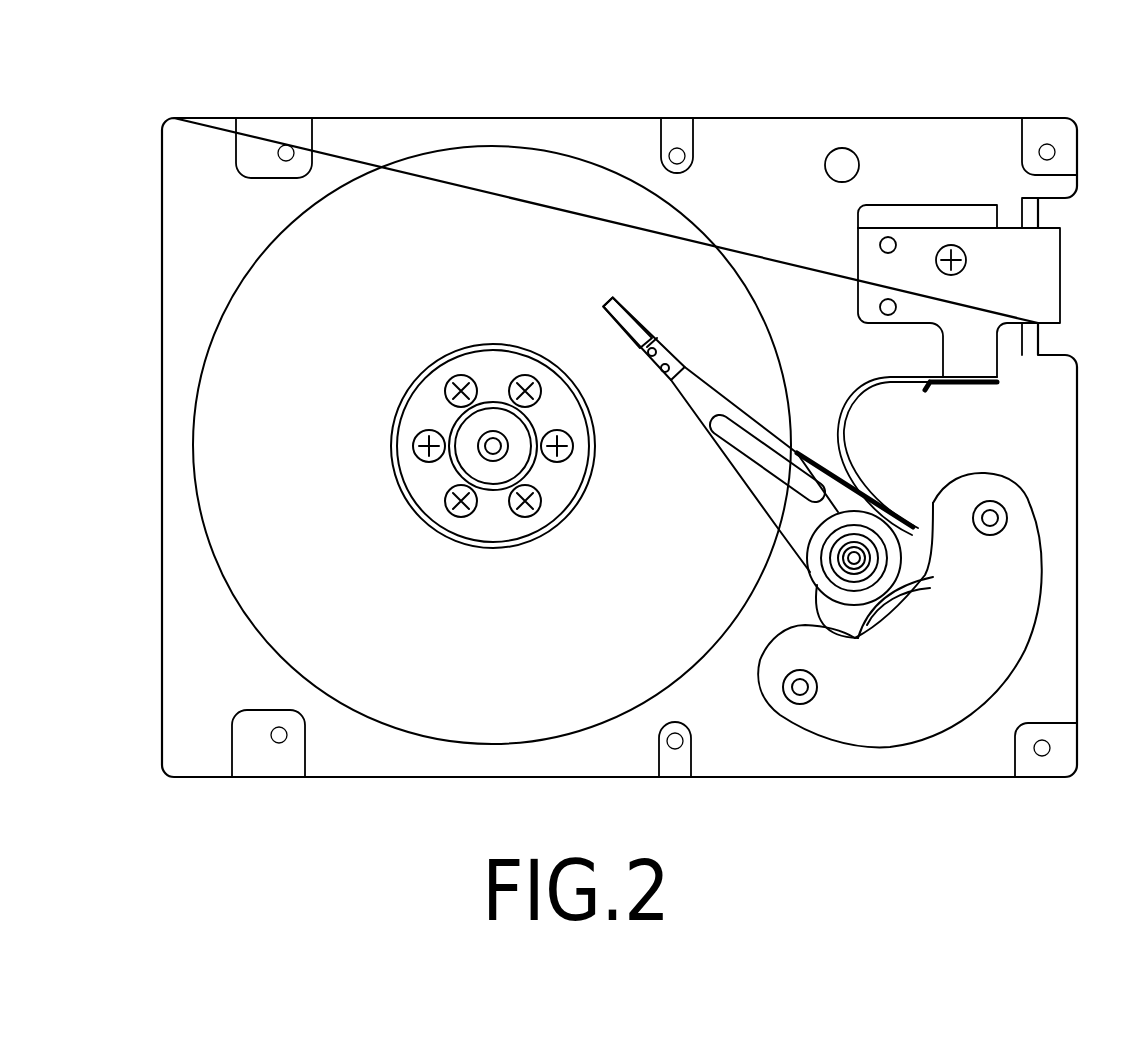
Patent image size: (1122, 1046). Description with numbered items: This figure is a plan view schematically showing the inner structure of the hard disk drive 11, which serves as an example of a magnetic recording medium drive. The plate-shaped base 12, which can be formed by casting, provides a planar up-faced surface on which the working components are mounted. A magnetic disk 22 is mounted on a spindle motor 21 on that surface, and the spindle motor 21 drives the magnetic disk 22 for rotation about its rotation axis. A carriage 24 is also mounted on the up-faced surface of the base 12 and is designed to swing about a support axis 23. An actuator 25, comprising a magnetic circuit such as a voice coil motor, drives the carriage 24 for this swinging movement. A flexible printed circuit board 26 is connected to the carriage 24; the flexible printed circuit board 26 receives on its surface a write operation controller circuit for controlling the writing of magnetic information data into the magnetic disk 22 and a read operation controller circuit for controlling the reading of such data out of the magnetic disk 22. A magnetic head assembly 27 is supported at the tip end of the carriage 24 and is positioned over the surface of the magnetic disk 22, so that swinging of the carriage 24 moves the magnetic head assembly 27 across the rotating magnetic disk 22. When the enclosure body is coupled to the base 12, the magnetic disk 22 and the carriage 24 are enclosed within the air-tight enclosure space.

The hard disk drive 11 is at (554, 91).
The base 12 is at (723, 117).
The spindle motor 21 is at (463, 460).
The magnetic disk 22 is at (692, 220).
The support axis 23 is at (830, 555).
The carriage 24 is at (710, 445).
The actuator 25 is at (772, 613).
The flexible printed circuit board 26 is at (900, 378).
The magnetic head assembly 27 is at (596, 337).